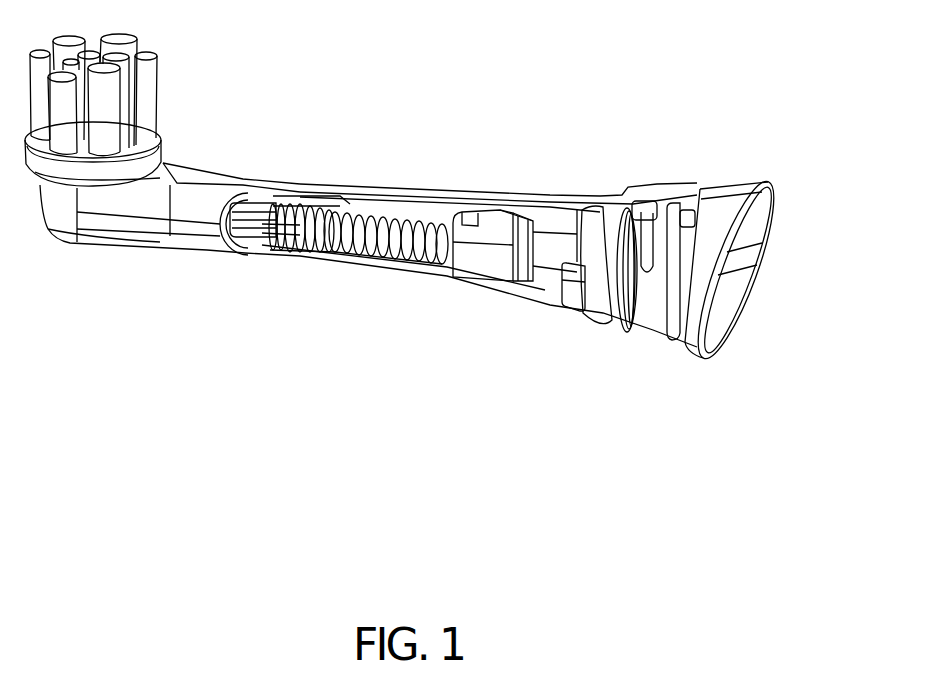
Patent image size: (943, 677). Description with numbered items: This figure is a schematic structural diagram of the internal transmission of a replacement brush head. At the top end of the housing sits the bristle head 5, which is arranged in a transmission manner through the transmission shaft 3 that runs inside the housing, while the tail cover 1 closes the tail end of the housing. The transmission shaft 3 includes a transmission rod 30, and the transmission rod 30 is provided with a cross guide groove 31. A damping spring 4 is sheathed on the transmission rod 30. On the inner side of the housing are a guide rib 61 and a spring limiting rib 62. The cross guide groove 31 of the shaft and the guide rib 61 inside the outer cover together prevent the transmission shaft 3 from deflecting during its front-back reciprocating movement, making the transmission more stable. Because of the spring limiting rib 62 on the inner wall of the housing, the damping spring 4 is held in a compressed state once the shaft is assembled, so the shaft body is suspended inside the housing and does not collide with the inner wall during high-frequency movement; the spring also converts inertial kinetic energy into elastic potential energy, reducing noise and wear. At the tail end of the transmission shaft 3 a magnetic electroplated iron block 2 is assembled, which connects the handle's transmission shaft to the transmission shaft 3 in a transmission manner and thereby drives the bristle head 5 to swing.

The tail cover 1 is at (734, 195).
The magnetic electroplated iron block 2 is at (530, 279).
The transmission shaft 3 is at (510, 208).
The damping spring 4 is at (372, 185).
The bristle head 5 is at (164, 126).
The transmission rod 30 is at (402, 263).
The cross guide groove 31 is at (268, 232).
The guide rib 61 is at (233, 264).
The spring limiting rib 62 is at (293, 182).